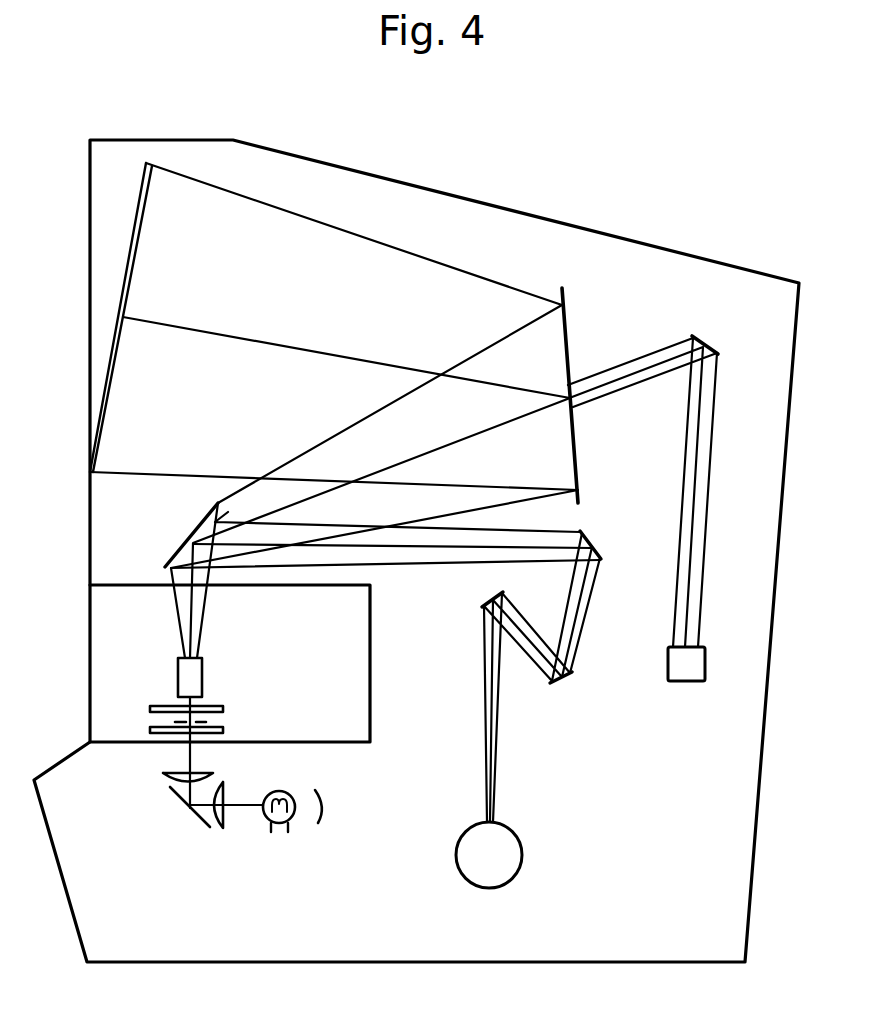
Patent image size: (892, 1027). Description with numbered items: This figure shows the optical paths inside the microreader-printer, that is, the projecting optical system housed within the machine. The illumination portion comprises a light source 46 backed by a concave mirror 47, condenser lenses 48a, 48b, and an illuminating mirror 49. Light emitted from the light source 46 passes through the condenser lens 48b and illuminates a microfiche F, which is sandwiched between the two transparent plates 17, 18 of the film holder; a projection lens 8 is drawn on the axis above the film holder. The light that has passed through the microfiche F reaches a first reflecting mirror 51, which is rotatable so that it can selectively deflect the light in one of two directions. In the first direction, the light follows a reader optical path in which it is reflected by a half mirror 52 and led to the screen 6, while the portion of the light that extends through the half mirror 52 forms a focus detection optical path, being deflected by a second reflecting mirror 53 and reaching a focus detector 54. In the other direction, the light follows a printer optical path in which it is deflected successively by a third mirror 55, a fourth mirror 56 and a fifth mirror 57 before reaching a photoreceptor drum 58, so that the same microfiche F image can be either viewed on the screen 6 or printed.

The screen 6 is at (131, 228).
The lens 8 is at (178, 672).
The transparent plate 17 is at (223, 730).
The transparent plate 18 is at (223, 708).
The microfiche F is at (212, 722).
The light source 46 is at (281, 792).
The concave mirror 47 is at (323, 805).
The condenser lens 48a is at (225, 828).
The condenser lens 48b is at (163, 775).
The illuminating mirror 49 is at (197, 818).
The first reflecting mirror 51 is at (172, 557).
The half mirror 52 is at (568, 337).
The second reflecting mirror 53 is at (718, 348).
The focus detector 54 is at (705, 663).
The third mirror 55 is at (601, 552).
The fourth mirror 56 is at (563, 683).
The fifth mirror 57 is at (482, 597).
The photoreceptor drum 58 is at (465, 832).